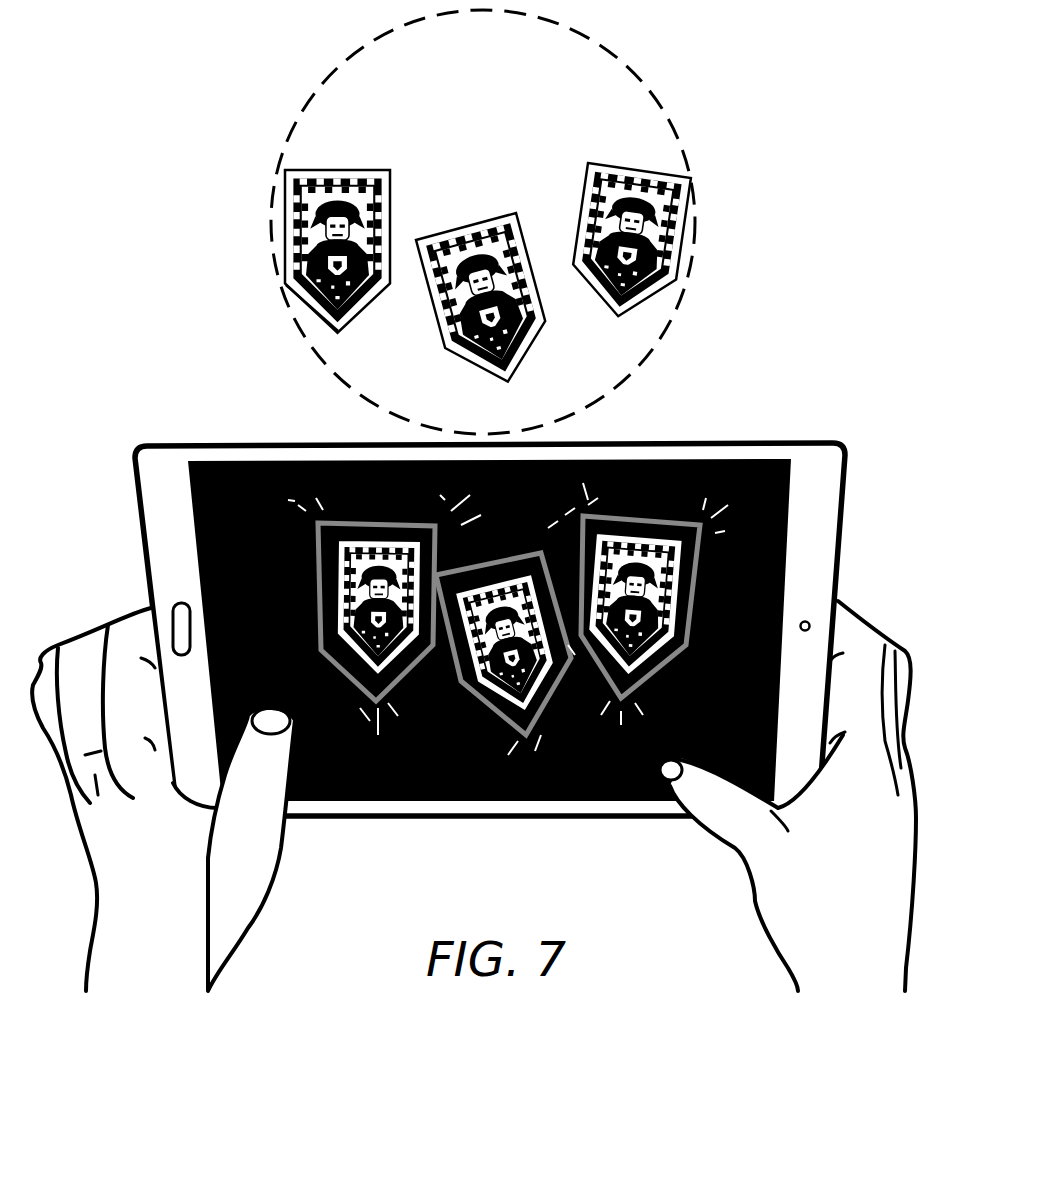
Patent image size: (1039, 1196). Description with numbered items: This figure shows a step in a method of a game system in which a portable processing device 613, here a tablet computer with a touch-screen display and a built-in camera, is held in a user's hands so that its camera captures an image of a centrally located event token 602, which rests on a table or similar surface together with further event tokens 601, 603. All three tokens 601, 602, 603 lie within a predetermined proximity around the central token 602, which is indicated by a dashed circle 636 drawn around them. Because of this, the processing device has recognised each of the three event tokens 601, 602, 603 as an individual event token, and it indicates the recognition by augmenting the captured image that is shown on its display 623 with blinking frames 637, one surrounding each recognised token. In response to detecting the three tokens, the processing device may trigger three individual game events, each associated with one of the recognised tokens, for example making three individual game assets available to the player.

The event token 601 is at (303, 160).
The event token 602 is at (428, 223).
The event token 603 is at (633, 160).
The portable processing device 613 is at (187, 447).
The display 623 is at (420, 795).
The dashed circle 636 is at (280, 303).
The blinking frames 637 is at (313, 557).